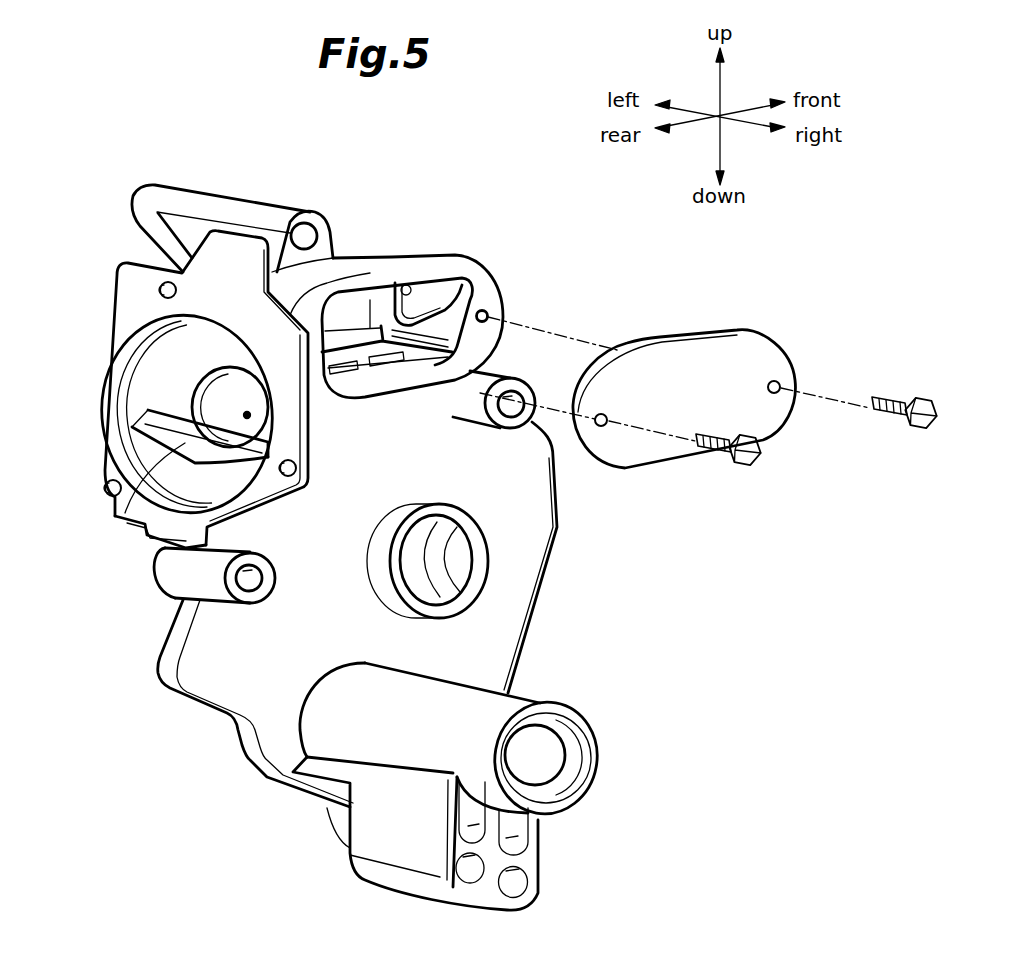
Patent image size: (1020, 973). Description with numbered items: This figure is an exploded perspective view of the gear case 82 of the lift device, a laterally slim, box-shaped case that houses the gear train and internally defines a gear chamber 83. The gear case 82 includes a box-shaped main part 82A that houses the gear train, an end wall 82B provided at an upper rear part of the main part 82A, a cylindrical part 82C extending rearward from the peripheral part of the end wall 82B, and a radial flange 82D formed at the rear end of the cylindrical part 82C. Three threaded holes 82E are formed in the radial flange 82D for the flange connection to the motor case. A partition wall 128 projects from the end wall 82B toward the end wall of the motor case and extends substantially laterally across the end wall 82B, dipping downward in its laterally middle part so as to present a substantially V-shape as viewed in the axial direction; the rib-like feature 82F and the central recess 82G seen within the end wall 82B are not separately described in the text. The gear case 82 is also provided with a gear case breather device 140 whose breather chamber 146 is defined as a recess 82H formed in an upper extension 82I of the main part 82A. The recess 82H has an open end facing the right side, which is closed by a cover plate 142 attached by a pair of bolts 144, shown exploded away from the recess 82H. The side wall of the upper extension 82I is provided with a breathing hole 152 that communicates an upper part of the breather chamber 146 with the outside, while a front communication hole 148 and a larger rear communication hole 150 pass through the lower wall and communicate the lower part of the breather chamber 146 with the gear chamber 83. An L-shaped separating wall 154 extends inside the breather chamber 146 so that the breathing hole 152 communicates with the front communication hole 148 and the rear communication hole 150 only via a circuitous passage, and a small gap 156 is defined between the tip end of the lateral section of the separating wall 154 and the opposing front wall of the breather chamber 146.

The gear case 82 is at (540, 565).
The main part 82A is at (533, 517).
The end wall 82B is at (163, 354).
The cylindrical part 82C is at (137, 385).
The radial flange 82D is at (290, 442).
The threaded holes 82E is at (158, 283).
The rib 82F is at (115, 432).
The central recess 82G is at (247, 415).
The recess 82H is at (330, 290).
The upper extension 82I is at (333, 270).
The gear chamber 83 is at (175, 272).
The partition wall 128 is at (127, 523).
The gear case breather device 140 is at (343, 314).
The cover plate 142 is at (676, 357).
The bolts 144 is at (716, 468).
The breather chamber 146 is at (372, 314).
The front communication hole 148 is at (390, 360).
The rear communication hole 150 is at (345, 368).
The breathing hole 152 is at (409, 285).
The separating wall 154 is at (444, 296).
The small gap 156 is at (488, 309).